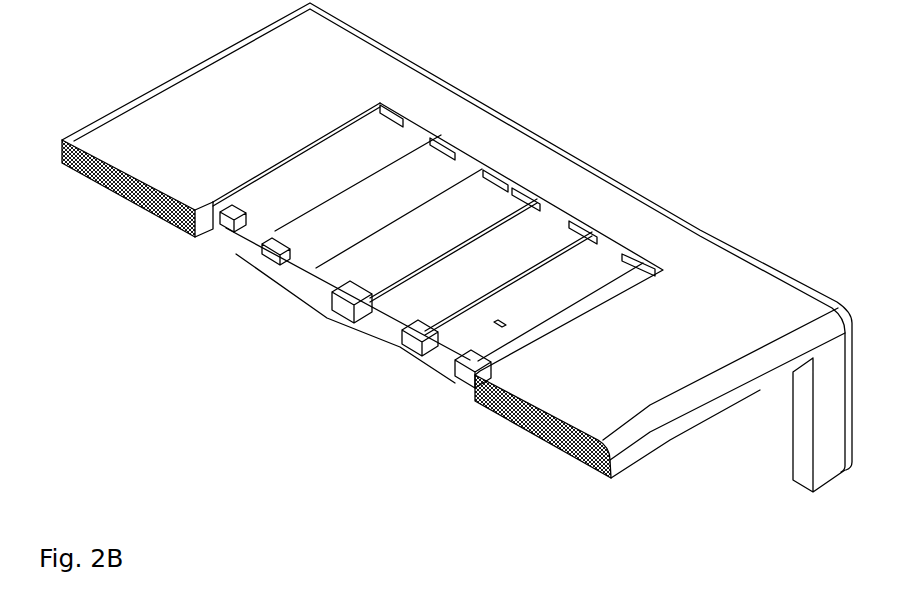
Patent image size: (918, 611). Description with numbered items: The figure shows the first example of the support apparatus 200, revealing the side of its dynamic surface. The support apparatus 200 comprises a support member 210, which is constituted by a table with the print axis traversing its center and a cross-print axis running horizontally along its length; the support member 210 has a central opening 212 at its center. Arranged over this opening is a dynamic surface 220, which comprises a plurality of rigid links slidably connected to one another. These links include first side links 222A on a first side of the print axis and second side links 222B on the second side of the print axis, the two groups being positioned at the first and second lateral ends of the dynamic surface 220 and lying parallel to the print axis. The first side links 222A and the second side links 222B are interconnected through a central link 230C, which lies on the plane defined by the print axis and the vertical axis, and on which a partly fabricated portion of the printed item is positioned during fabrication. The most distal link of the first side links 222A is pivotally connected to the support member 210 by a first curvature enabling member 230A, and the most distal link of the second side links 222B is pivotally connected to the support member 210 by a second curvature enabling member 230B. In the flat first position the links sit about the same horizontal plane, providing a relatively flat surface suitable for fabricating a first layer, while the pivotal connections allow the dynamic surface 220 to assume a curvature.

The support apparatus 200 is at (457, 247).
The support member 210 is at (628, 218).
The central opening 212 is at (203, 215).
The dynamic surface 220 is at (473, 190).
The first side links 222A is at (255, 207).
The second side links 222B is at (493, 325).
The first curvature enabling member 230A is at (215, 236).
The second curvature enabling member 230B is at (472, 377).
The central link 230C is at (388, 265).